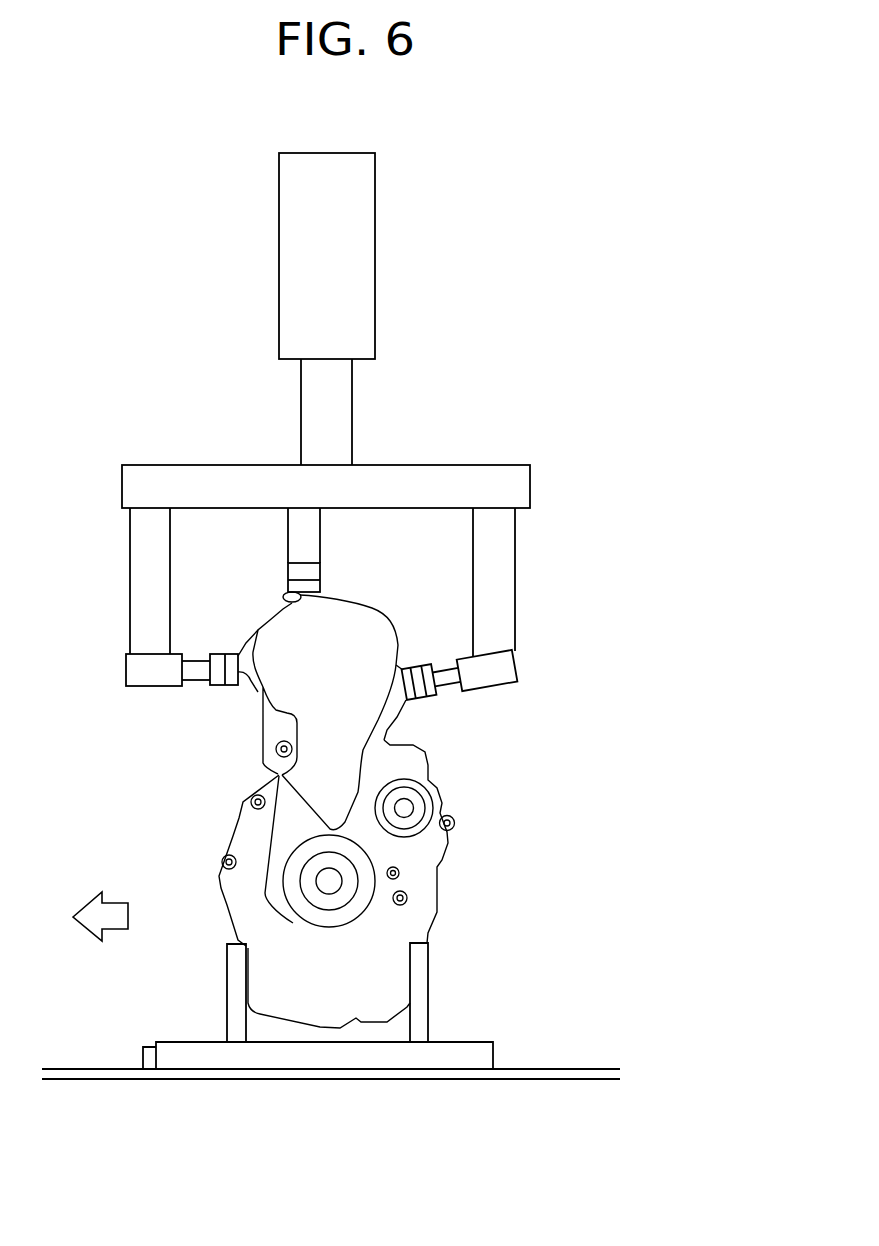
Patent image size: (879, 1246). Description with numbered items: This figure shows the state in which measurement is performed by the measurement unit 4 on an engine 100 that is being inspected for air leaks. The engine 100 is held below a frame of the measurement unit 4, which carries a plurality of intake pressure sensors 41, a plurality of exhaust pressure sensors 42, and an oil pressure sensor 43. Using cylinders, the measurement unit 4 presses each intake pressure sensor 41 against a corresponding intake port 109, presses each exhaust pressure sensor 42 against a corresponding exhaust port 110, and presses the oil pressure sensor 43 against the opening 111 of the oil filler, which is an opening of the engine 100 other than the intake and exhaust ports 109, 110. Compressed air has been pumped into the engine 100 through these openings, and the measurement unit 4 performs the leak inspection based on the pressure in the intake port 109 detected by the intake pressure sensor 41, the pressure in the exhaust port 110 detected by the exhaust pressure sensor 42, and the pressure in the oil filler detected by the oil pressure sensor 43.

The measurement unit 4 is at (443, 478).
The intake pressure sensor 41 is at (425, 693).
The exhaust pressure sensor 42 is at (218, 660).
The oil pressure sensor 43 is at (313, 572).
The engine 100 is at (240, 893).
The intake port 109 is at (398, 665).
The exhaust port 110 is at (249, 678).
The opening of oil filler 111 is at (282, 596).